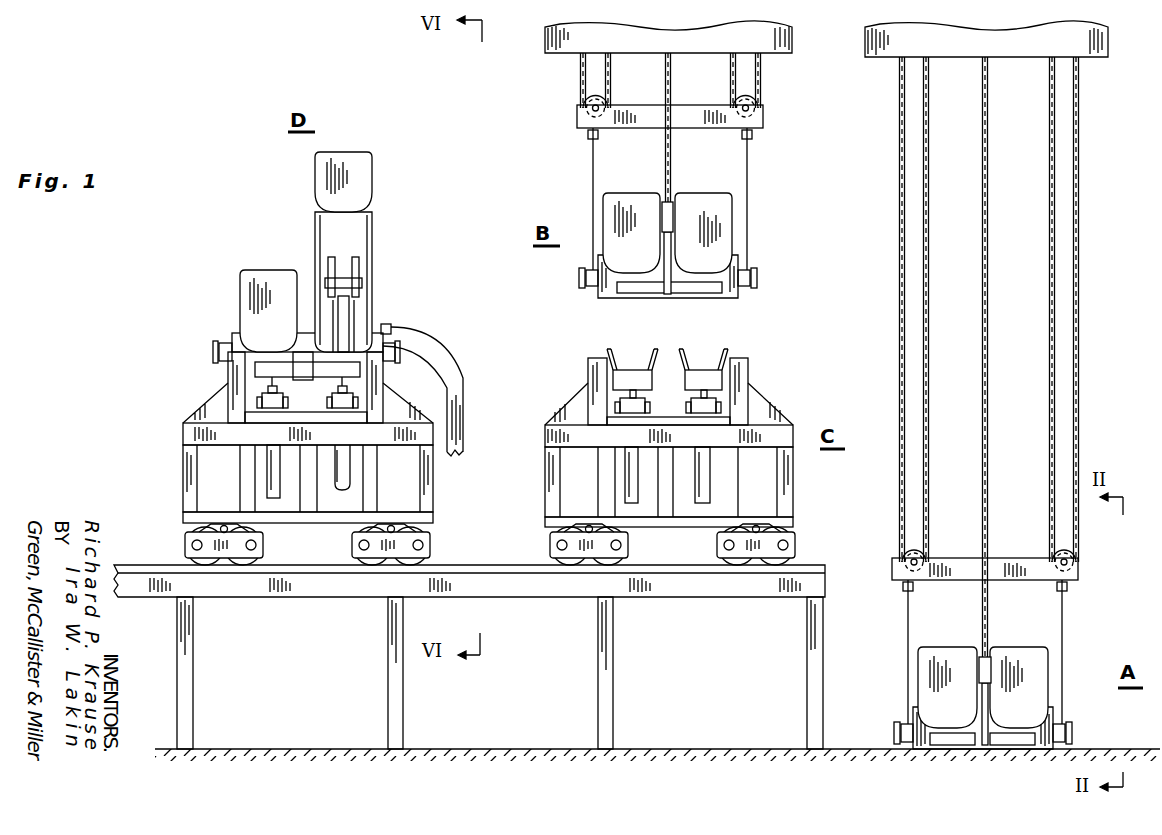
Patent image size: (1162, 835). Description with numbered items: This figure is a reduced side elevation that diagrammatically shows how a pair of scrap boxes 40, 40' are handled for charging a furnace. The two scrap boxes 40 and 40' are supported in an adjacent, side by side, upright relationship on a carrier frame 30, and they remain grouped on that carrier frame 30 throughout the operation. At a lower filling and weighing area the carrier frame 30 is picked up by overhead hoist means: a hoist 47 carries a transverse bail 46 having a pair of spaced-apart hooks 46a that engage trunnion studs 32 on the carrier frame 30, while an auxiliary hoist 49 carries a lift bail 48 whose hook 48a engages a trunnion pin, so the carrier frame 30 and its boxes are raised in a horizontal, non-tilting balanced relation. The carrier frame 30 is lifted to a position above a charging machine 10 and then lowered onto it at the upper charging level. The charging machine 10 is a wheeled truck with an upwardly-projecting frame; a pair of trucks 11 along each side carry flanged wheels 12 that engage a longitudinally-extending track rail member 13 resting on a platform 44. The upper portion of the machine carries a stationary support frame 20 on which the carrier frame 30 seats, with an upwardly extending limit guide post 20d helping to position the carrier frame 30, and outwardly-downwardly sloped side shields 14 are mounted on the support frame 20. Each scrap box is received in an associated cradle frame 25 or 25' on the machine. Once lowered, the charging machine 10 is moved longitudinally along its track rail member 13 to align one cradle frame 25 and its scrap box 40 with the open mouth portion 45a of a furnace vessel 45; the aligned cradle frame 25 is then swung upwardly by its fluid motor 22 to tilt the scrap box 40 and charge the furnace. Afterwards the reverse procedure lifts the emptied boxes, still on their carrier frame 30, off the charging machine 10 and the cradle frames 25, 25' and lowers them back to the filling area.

The charging machine 10 is at (434, 478).
The truck 11 is at (433, 539).
The flanged wheel 12 is at (793, 550).
The track rail member 13 is at (157, 565).
The side shield 14 is at (565, 409).
The support frame 20 is at (597, 372).
The back end limit guide post 20d is at (745, 371).
The fluid motor 22 is at (275, 498).
The cradle frame 25 is at (703, 370).
The cradle frame 25' is at (632, 370).
The carrier frame 30 is at (233, 335).
The trunnion stud 32 is at (758, 276).
The scrap box 40 is at (681, 440).
The scrap box 40' is at (587, 444).
The platform 44 is at (528, 565).
The furnace vessel 45 is at (432, 350).
The open mouth portion 45a is at (388, 330).
The transverse bail 46 is at (766, 118).
The hook 46a is at (591, 167).
The hoist 47 is at (581, 71).
The lift bail 48 is at (673, 216).
The hook 48a is at (673, 243).
The auxiliary hoist 49 is at (671, 78).